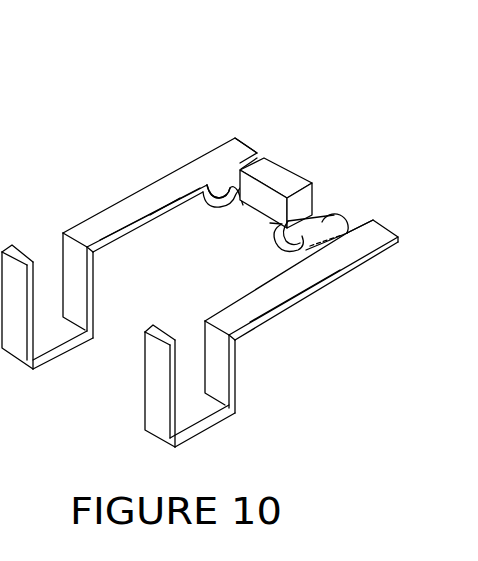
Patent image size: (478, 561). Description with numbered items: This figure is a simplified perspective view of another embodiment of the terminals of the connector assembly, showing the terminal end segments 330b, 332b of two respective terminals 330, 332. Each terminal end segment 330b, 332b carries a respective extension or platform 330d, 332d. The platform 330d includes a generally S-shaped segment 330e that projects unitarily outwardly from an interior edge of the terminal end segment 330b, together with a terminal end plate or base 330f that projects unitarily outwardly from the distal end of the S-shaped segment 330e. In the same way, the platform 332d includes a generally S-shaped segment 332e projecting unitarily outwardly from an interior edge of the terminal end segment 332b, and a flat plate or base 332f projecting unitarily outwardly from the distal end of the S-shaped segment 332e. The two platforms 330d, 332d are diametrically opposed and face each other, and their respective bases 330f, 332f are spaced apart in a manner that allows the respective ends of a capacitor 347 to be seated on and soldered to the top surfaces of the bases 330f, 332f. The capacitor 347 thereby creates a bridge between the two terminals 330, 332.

The terminal 332 is at (113, 202).
The terminal end segment 332b is at (132, 205).
The platform 332d is at (186, 210).
The S-shaped segment 332e is at (237, 187).
The flat plate or base 332f is at (253, 210).
The capacitor 347 is at (270, 170).
The terminal 330 is at (267, 320).
The terminal end segment 330b is at (293, 300).
The platform 330d is at (346, 220).
The S-shaped segment 330e is at (334, 215).
The terminal end plate or base 330f is at (283, 230).